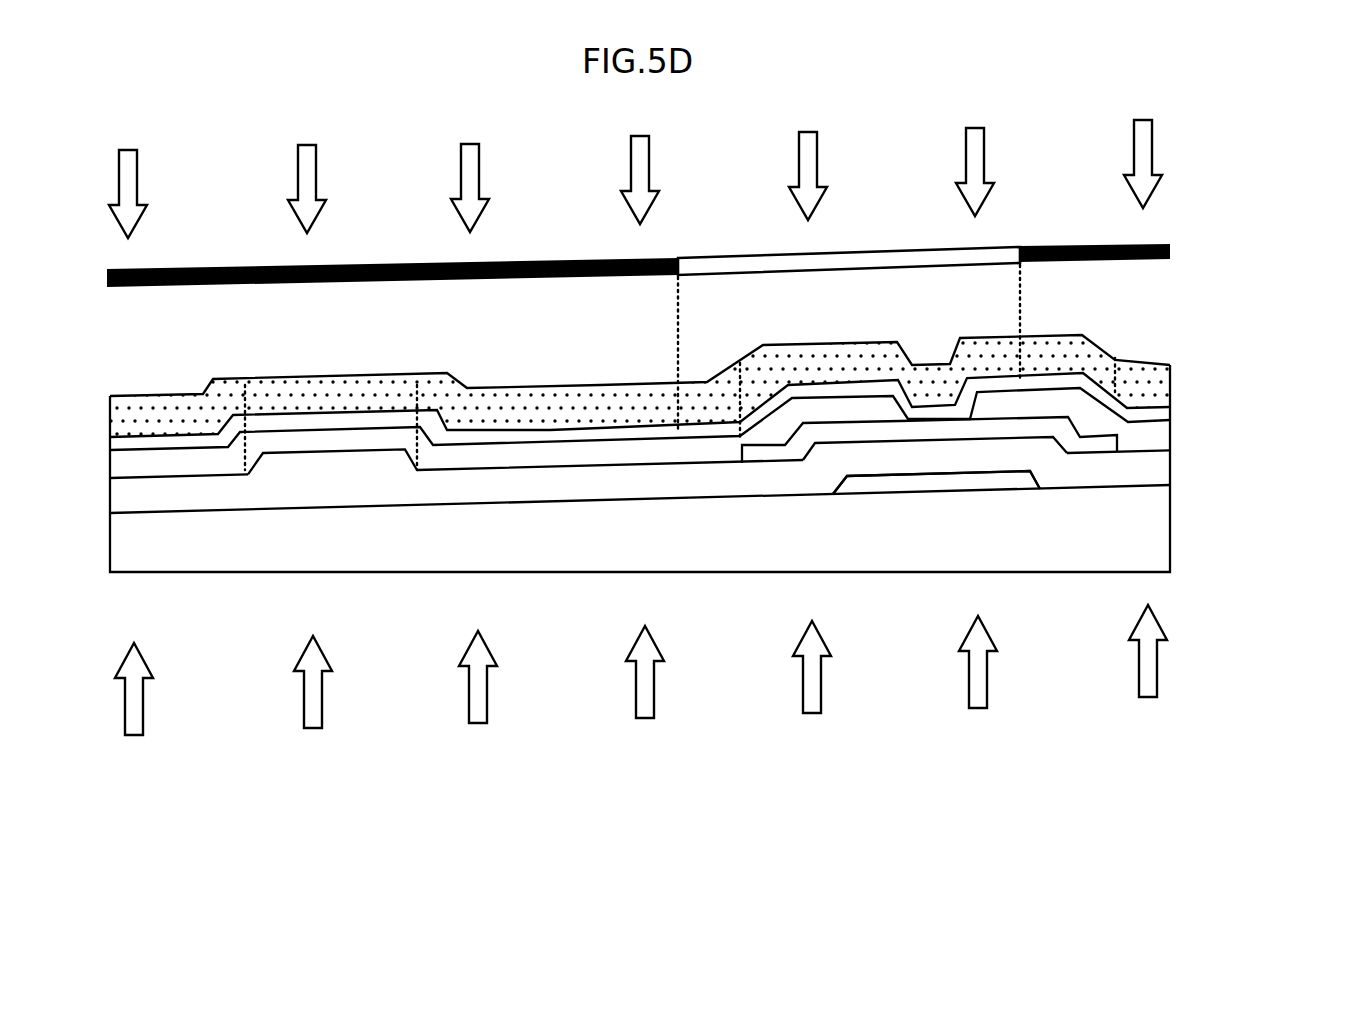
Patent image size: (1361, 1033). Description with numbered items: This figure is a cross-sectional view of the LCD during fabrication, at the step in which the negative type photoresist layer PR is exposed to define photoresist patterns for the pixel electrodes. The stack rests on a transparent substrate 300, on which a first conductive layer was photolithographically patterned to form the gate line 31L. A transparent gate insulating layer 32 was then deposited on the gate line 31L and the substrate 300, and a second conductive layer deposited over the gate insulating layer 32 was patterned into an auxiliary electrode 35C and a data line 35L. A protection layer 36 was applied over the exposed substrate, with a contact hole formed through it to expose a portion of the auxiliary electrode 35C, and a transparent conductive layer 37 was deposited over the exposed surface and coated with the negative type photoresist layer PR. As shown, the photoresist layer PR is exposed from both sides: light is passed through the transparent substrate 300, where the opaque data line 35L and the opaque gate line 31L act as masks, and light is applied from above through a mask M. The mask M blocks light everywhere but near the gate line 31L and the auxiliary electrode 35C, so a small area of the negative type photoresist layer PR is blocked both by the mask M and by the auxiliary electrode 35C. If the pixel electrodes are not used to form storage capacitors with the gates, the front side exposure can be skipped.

The mask M is at (1168, 247).
The negative type photoresist layer PR is at (580, 395).
The transparent substrate 300 is at (1165, 517).
The gate line 31L is at (917, 483).
The gate insulating layer 32 is at (1092, 470).
The data line 35L is at (337, 463).
The auxiliary electrode 35C is at (1032, 423).
The protection layer 36 is at (1165, 437).
The transparent conductive layer 37 is at (818, 392).